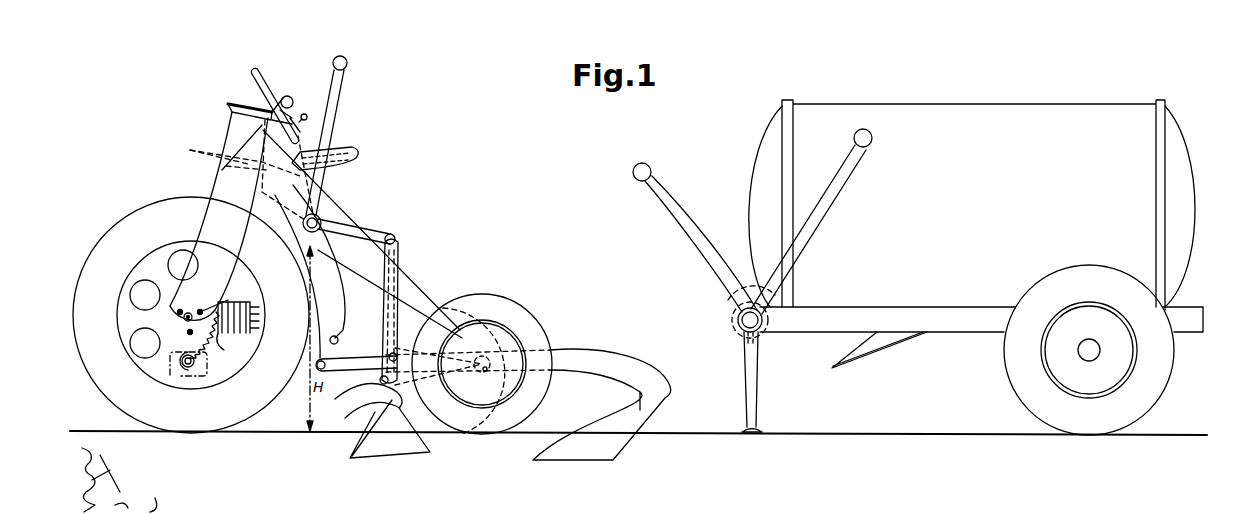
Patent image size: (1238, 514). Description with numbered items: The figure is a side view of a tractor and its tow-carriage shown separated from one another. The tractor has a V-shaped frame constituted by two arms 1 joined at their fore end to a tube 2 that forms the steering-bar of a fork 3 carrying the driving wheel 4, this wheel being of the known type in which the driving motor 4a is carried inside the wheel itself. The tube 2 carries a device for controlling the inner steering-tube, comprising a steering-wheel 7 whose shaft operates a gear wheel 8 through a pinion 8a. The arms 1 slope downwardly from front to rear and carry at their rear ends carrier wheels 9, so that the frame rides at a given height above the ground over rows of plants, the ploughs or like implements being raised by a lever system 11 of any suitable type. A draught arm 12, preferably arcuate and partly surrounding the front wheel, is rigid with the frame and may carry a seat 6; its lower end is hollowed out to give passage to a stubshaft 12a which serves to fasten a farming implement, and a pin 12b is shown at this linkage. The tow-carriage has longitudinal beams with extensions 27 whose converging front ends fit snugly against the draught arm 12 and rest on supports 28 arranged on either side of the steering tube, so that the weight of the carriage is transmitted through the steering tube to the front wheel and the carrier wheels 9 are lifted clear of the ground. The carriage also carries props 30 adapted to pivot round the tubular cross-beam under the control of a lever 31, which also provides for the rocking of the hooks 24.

The arm 1 is at (333, 212).
The tube 2 is at (238, 130).
The fork 3 is at (199, 277).
The driving wheel 4 is at (160, 265).
The driving motor 4a is at (214, 339).
The seat 6 is at (347, 148).
The steering-wheel 7 is at (262, 70).
The gear wheel 8 is at (233, 103).
The pinion 8a is at (267, 106).
The carrier wheel 9 is at (499, 301).
The lever system 11 is at (368, 232).
The draught arm 12 is at (333, 310).
The stubshaft 12a is at (315, 369).
The pin 12b is at (339, 341).
The hook 24 is at (740, 292).
The extension 27 is at (710, 250).
The support 28 is at (234, 159).
The prop 30 is at (758, 363).
The lever 31 is at (845, 172).